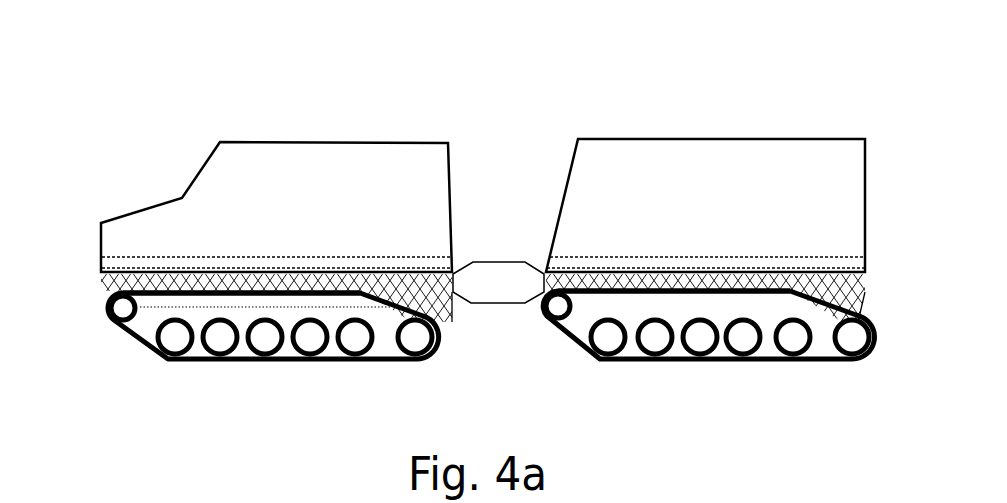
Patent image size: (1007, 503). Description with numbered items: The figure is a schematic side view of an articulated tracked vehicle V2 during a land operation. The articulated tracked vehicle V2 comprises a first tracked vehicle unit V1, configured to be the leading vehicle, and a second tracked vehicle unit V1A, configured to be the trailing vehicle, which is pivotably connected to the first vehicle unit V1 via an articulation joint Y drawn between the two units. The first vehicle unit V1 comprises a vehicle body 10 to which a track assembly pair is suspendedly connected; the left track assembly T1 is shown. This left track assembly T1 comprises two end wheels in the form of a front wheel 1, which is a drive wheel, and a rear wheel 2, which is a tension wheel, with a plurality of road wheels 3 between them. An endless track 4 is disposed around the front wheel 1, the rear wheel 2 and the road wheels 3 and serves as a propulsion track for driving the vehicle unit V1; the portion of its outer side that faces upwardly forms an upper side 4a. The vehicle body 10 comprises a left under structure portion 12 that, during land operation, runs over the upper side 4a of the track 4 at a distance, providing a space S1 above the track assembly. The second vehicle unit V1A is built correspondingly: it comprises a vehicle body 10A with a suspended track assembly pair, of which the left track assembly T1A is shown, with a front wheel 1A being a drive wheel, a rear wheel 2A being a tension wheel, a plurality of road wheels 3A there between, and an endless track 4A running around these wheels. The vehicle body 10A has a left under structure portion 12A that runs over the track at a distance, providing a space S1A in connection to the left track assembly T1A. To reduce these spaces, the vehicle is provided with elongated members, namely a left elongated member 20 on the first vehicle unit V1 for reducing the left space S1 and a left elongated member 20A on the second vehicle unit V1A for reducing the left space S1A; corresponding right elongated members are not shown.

The articulated tracked vehicle V2 is at (544, 62).
The first tracked vehicle unit V1 is at (352, 120).
The second tracked vehicle unit V1A is at (737, 110).
The articulation joint Y is at (490, 260).
The vehicle body 10 is at (284, 139).
The vehicle body 10A is at (666, 137).
The left elongated member 20 is at (120, 254).
The left elongated member 20A is at (818, 255).
The left under structure portion 12 is at (122, 274).
The left under structure portion 12A is at (838, 274).
The space S1 is at (425, 297).
The space S1A is at (842, 298).
The left track assembly T1 is at (128, 340).
The left track assembly T1A is at (562, 344).
The front wheel 1 is at (254, 359).
The front wheel 1A is at (693, 357).
The rear wheel 2 is at (400, 359).
The rear wheel 2A is at (832, 359).
The road wheels 3 is at (187, 359).
The road wheels 3A is at (620, 359).
The endless track 4 is at (149, 356).
The endless track 4A is at (579, 356).
The upper side 4a is at (245, 292).